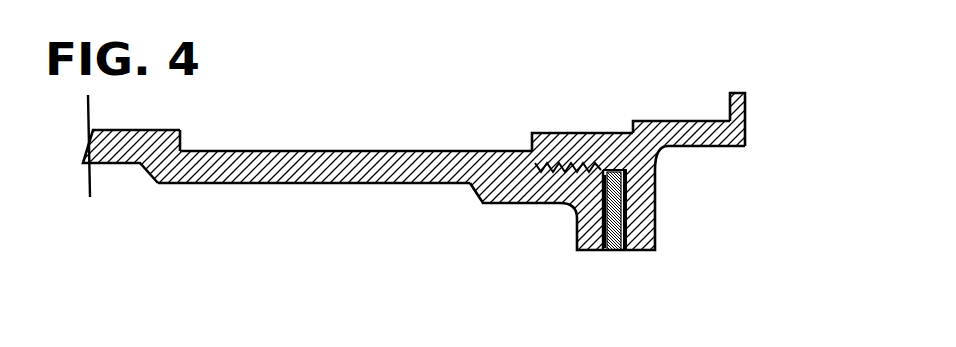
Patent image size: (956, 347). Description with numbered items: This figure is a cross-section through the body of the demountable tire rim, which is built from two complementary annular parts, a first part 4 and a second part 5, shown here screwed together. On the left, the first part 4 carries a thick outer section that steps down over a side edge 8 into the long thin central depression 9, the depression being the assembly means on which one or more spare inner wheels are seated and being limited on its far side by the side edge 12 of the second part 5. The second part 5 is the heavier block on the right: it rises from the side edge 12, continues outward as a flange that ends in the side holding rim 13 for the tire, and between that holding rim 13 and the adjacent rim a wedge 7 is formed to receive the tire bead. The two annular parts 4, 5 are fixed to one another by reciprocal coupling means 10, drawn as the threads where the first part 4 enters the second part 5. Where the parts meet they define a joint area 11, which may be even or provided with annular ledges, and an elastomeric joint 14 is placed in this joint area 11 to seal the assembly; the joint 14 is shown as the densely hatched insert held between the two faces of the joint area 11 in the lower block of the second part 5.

The first part 4 is at (166, 192).
The second part 5 is at (695, 180).
The wedge 7 is at (693, 106).
The side edge 8 is at (182, 145).
The central depression 9 is at (352, 151).
The reciprocal coupling means 10 is at (500, 203).
The joint area 11 is at (583, 251).
The side edge 12 is at (532, 147).
The side holding rim 13 is at (746, 118).
The elastomeric joint 14 is at (612, 252).